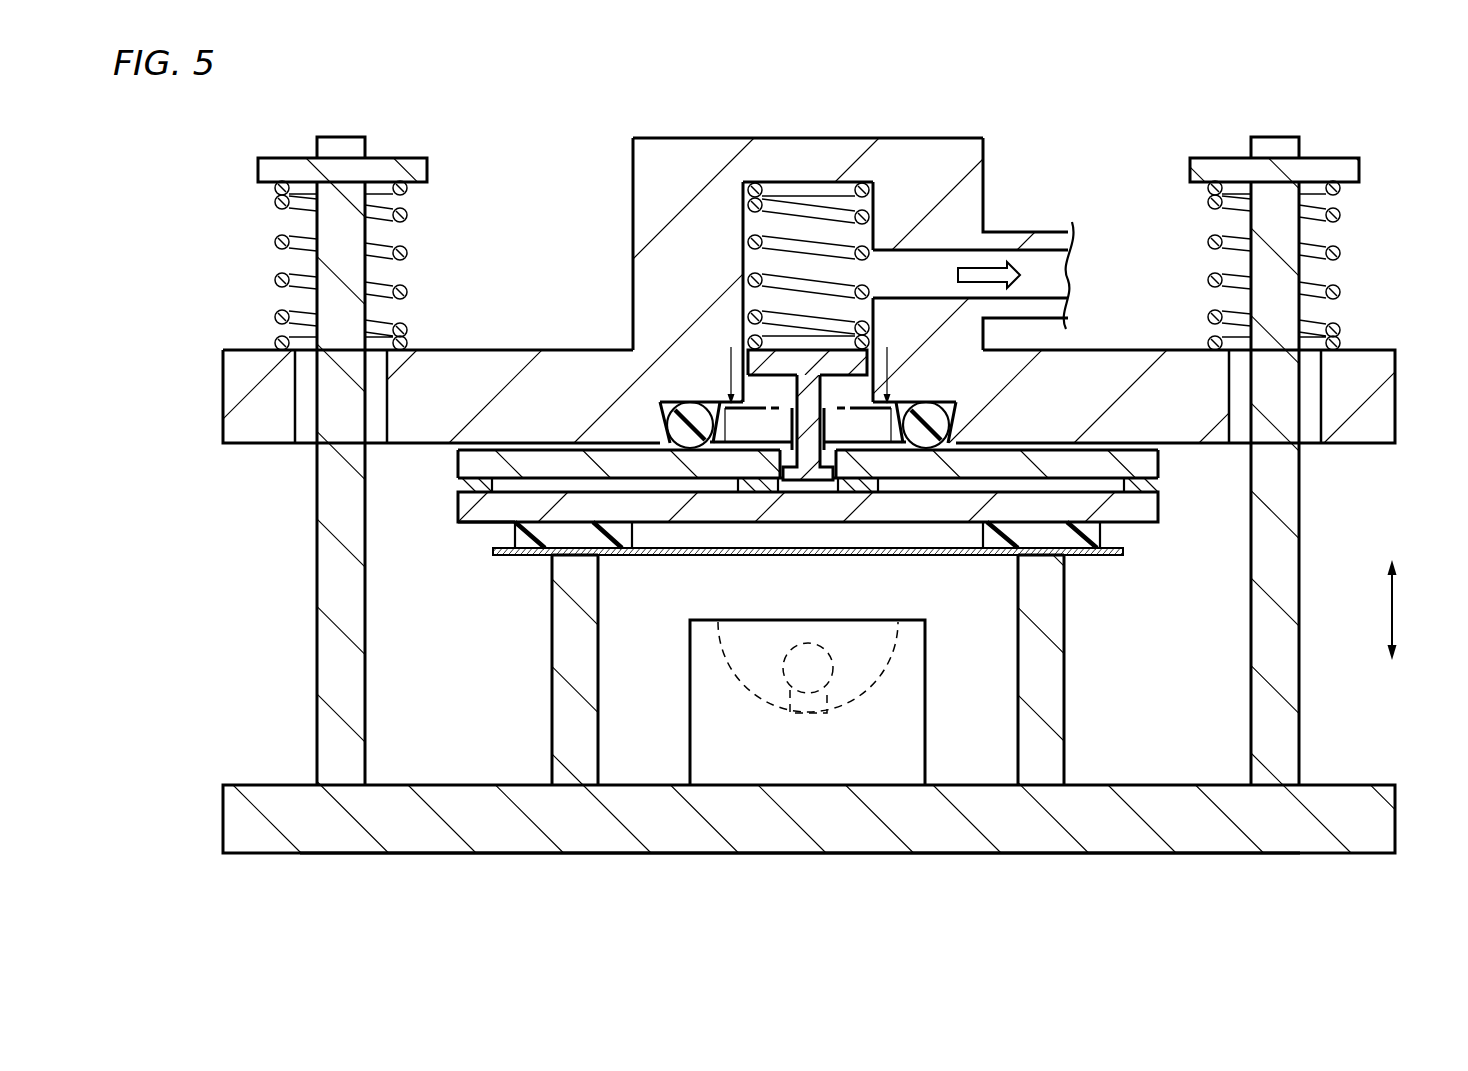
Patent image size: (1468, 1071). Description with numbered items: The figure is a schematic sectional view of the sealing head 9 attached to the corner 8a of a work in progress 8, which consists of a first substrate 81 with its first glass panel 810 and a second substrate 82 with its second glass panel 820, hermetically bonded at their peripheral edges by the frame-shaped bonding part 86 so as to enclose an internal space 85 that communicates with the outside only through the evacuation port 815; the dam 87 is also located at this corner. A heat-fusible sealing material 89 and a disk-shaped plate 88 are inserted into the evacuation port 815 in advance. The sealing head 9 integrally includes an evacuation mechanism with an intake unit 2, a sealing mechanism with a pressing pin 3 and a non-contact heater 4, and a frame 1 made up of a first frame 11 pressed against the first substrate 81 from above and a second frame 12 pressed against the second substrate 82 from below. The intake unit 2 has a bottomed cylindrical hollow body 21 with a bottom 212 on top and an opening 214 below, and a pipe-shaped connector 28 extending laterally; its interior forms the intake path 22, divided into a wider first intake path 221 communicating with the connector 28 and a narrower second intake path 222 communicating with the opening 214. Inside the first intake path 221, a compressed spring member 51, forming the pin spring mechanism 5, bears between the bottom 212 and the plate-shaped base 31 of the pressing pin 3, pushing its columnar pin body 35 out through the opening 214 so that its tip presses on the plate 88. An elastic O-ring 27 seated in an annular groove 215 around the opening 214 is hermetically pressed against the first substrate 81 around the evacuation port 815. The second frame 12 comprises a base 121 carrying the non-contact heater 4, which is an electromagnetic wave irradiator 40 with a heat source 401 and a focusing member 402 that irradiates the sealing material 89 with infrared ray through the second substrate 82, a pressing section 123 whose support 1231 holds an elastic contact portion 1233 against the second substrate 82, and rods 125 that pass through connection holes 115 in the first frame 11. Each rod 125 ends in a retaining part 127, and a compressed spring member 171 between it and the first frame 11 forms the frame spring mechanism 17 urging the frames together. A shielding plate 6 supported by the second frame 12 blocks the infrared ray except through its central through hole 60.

The frame 1 is at (146, 505).
The intake unit 2 is at (906, 137).
The pressing pin 3 is at (583, 272).
The non-contact heater 4 is at (927, 712).
The pin spring mechanism 5 is at (746, 214).
The shielding plate 6 is at (977, 556).
The work in progress 8 is at (457, 473).
The corner 8a is at (461, 523).
The sealing head 9 is at (545, 137).
The first frame 11 is at (230, 446).
The second frame 12 is at (236, 782).
The frame spring mechanism 17 is at (1368, 189).
The hollow body 21 is at (652, 137).
The intake path 22 is at (871, 203).
The O-ring 27 is at (952, 415).
The connector 28 is at (1028, 231).
The base 31 is at (802, 396).
The pin body 35 is at (806, 406).
The electromagnetic wave irradiator 40 is at (807, 702).
The spring member 51 is at (834, 260).
The through hole 60 is at (815, 556).
The first substrate 81 is at (1160, 457).
The second substrate 82 is at (1160, 508).
The internal space 85 is at (1114, 494).
The bonding part 86 is at (1128, 486).
The dam 87 is at (870, 494).
The plate 88 is at (839, 460).
The sealing material 89 is at (793, 486).
The connection hole 115 is at (298, 446).
The base 121 is at (461, 854).
The pressing section 123 is at (462, 640).
The rod 125 is at (340, 255).
The retaining part 127 is at (283, 158).
The spring member 171 is at (276, 238).
The bottom 212 is at (768, 137).
The opening 214 is at (779, 494).
The groove 215 is at (940, 400).
The first intake path 221 is at (742, 293).
The second intake path 222 is at (793, 423).
The heat source 401 is at (792, 648).
The focusing member 402 is at (888, 641).
The first glass panel 810 is at (457, 462).
The evacuation port 815 is at (826, 478).
The second glass panel 820 is at (513, 524).
The support 1231 is at (556, 713).
The contact portion 1233 is at (551, 550).